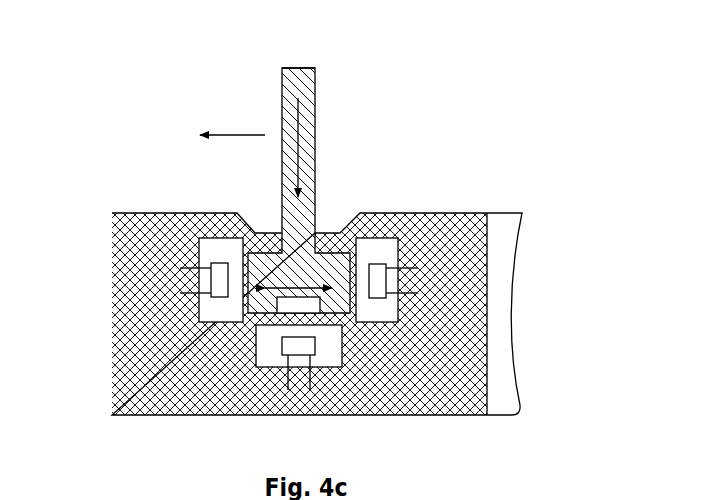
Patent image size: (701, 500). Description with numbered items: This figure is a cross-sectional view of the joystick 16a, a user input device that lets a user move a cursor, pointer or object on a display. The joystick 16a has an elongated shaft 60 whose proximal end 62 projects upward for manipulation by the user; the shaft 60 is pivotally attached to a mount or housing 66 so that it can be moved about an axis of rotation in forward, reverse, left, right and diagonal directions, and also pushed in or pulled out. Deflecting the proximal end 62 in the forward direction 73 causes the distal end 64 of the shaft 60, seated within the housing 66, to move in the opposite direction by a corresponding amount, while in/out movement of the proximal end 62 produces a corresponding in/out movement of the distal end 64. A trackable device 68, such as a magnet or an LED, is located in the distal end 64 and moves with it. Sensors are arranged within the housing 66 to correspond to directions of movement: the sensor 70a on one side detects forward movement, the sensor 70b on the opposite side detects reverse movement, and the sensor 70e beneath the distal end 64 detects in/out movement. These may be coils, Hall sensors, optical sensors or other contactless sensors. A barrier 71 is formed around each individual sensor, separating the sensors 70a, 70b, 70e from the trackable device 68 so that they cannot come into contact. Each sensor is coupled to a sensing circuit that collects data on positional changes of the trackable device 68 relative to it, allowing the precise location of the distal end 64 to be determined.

The joystick 16a is at (178, 52).
The elongated shaft 60 is at (315, 133).
The proximal end 62 is at (293, 68).
The distal end 64 is at (280, 320).
The housing 66 is at (433, 415).
The trackable device 68 is at (322, 305).
The sensor 70a is at (216, 240).
The sensor 70b is at (379, 240).
The sensor 70e is at (282, 348).
The barrier 71 is at (217, 262).
The forward direction 73 is at (232, 149).